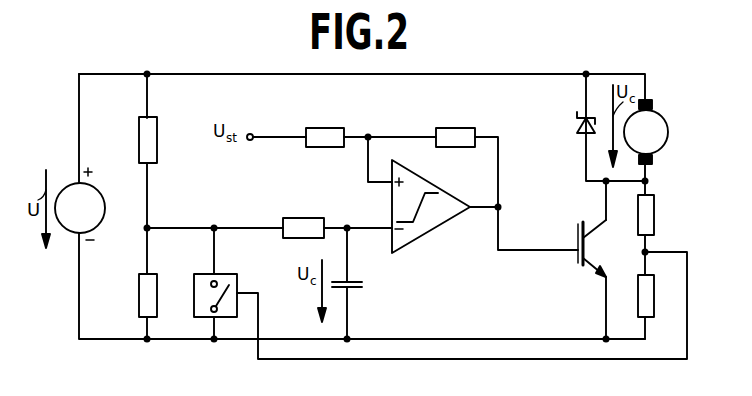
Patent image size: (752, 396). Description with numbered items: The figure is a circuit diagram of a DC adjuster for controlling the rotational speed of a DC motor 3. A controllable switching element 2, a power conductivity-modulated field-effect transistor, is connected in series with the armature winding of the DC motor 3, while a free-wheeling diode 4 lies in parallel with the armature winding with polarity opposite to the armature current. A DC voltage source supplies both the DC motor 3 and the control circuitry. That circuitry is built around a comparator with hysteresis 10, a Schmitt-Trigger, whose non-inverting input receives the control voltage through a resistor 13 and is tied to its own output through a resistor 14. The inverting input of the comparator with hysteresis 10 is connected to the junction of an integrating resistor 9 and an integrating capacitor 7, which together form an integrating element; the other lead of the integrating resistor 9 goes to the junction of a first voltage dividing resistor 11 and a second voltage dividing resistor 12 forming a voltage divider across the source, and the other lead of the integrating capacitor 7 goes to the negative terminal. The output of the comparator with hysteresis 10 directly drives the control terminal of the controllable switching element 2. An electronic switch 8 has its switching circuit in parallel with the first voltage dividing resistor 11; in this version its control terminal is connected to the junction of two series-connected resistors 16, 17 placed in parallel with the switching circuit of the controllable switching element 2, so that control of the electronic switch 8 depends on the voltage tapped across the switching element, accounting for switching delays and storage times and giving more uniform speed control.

The controllable switching element 2 is at (597, 250).
The DC motor 3 is at (657, 128).
The free-wheeling diode 4 is at (574, 127).
The integrating capacitor 7 is at (358, 292).
The electronic switch 8 is at (226, 282).
The integrating resistor 9 is at (305, 222).
The comparator with hysteresis 10 is at (428, 228).
The first voltage dividing resistor 11 is at (144, 301).
The second voltage dividing resistor 12 is at (153, 147).
The resistor 13 is at (318, 136).
The resistor 14 is at (447, 136).
The resistor 16 is at (655, 225).
The resistor 17 is at (655, 310).